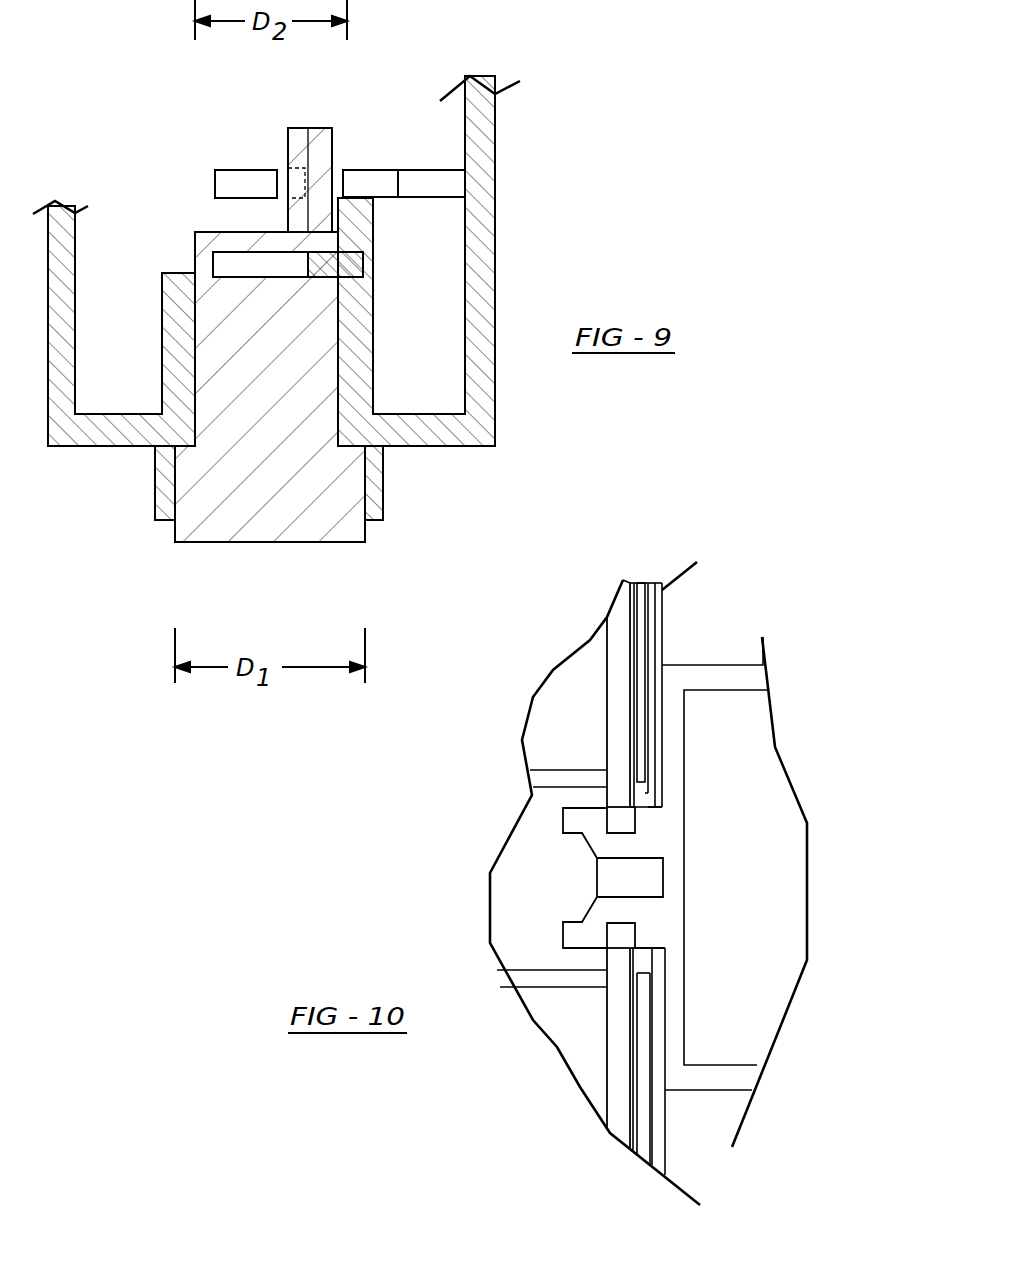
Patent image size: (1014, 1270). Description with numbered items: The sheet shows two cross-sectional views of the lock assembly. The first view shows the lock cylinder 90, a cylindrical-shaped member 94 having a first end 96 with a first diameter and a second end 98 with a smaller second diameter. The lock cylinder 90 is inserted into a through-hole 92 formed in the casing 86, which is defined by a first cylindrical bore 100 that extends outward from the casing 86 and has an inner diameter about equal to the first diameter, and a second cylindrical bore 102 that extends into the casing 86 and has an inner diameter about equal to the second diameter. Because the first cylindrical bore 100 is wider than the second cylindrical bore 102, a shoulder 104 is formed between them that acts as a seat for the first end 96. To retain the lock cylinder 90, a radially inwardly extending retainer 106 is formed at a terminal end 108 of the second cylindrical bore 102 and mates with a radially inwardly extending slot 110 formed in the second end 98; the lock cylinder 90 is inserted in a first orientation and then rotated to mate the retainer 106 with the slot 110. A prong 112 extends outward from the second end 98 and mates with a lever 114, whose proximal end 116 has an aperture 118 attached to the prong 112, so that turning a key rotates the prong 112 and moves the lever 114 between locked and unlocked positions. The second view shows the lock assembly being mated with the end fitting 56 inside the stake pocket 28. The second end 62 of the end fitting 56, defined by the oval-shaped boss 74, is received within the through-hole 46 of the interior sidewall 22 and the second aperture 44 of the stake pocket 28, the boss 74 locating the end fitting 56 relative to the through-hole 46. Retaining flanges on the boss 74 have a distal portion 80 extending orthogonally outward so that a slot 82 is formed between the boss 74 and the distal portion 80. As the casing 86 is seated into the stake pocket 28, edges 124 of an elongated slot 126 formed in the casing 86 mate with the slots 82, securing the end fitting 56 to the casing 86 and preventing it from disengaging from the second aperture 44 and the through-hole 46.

In FIG. 10, the interior sidewall 22 is at (662, 625).
In FIG. 10, the stake pocket 28 is at (643, 1103).
In FIG. 10, the second aperture 44 is at (650, 958).
In FIG. 10, the through-hole 46 is at (650, 823).
In FIG. 10, the end fitting 56 is at (722, 672).
In FIG. 10, the second end 62 is at (556, 884).
In FIG. 10, the oval-shaped boss 74 is at (652, 833).
In FIG. 10, the distal portion 80 is at (572, 818).
In FIG. 10, the slot 82 is at (637, 837).
In FIG. 9, the casing 86 is at (478, 120).
In FIG. 10, the casing 86 is at (615, 685).
In FIG. 9, the lock cylinder 90 is at (258, 485).
In FIG. 9, the through-hole 92 is at (200, 376).
In FIG. 9, the cylindrical-shaped member 94 is at (270, 423).
In FIG. 9, the first end 96 is at (212, 542).
In FIG. 9, the second end 98 is at (195, 245).
In FIG. 9, the first cylindrical bore 100 is at (177, 460).
In FIG. 9, the second cylindrical bore 102 is at (335, 378).
In FIG. 9, the shoulder 104 is at (357, 448).
In FIG. 9, the retainer 106 is at (350, 262).
In FIG. 9, the terminal end 108 is at (173, 272).
In FIG. 9, the slot 110 is at (275, 262).
In FIG. 9, the prong 112 is at (333, 135).
In FIG. 9, the lever 114 is at (372, 175).
In FIG. 9, the proximal end 116 is at (398, 178).
In FIG. 9, the aperture 118 is at (340, 192).
In FIG. 10, the edges 124 is at (620, 847).
In FIG. 10, the elongated slot 126 is at (610, 913).